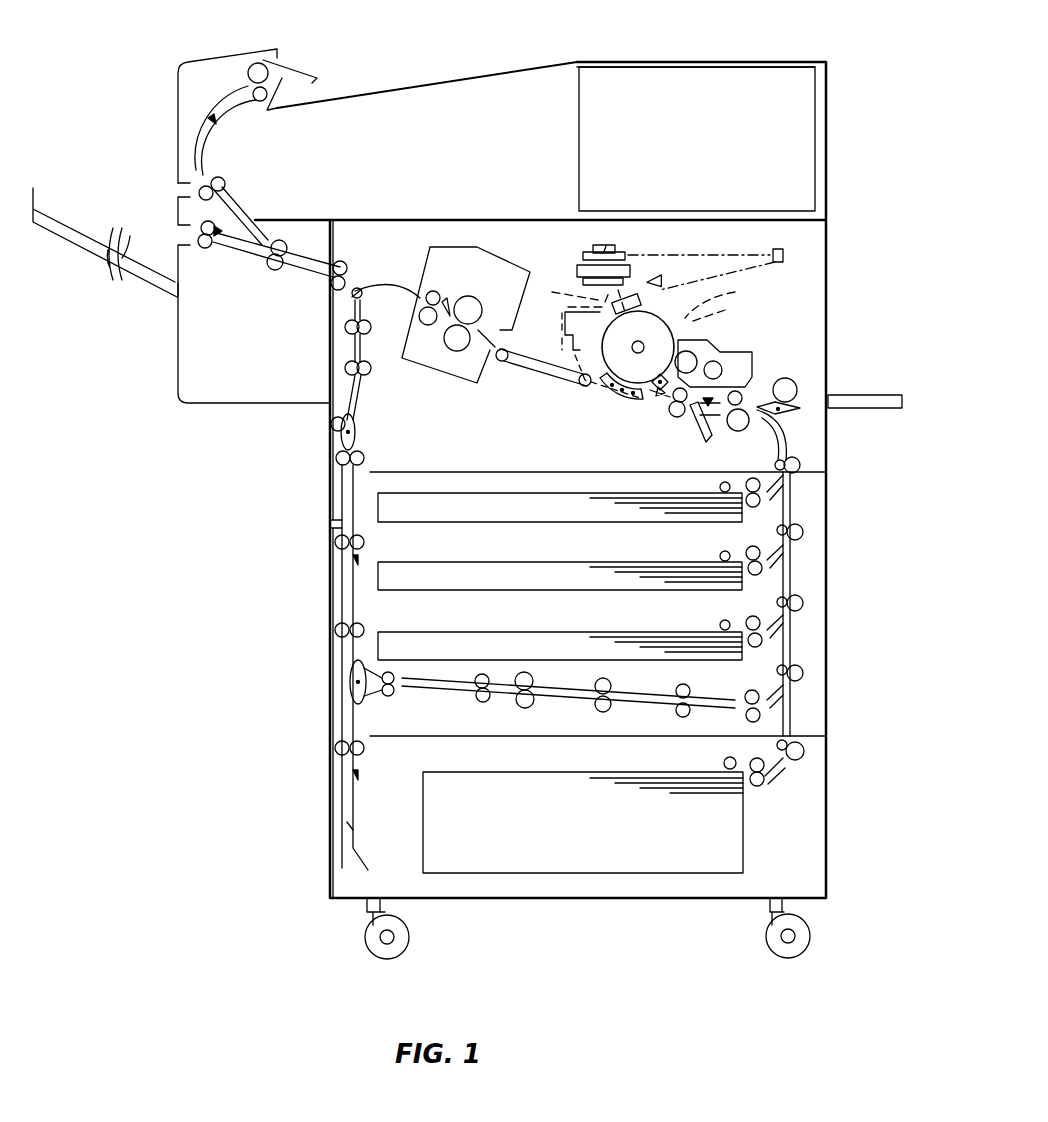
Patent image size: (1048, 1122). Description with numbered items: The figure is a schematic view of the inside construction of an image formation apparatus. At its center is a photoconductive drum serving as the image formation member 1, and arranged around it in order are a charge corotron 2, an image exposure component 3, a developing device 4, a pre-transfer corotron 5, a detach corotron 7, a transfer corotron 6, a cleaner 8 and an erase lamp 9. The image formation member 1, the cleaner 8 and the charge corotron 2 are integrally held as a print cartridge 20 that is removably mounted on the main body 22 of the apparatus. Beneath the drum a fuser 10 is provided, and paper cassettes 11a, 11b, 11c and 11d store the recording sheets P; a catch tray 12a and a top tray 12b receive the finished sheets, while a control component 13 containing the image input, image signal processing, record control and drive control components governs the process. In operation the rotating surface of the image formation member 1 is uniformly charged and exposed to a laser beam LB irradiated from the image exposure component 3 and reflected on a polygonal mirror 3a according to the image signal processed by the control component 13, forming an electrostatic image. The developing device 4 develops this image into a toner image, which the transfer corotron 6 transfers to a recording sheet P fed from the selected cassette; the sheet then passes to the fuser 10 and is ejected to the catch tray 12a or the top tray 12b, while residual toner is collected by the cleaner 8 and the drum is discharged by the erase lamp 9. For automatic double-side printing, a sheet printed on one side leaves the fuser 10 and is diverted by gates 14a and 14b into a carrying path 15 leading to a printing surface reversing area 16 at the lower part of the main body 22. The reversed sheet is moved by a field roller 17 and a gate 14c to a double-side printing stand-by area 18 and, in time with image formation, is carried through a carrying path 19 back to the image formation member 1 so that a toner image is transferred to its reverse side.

The photoconductive drum 1 is at (678, 325).
The charge corotron 2 is at (600, 290).
The image exposure component 3 is at (590, 245).
The polygonal mirror 3a is at (606, 245).
The laser beam LB is at (637, 250).
The developing device 4 is at (735, 355).
The pre-transfer corotron 5 is at (670, 412).
The transfer corotron 6 is at (645, 392).
The detach corotron 7 is at (620, 392).
The cleaner 8 is at (565, 325).
The erase lamp 9 is at (578, 294).
The fuser 10 is at (443, 375).
The paper cassette 11a is at (640, 522).
The paper cassette 11b is at (640, 590).
The paper cassette 11c is at (650, 662).
The paper cassette 11d is at (743, 818).
The catch tray 12a is at (80, 250).
The top tray 12b is at (360, 97).
The control component 13 is at (742, 90).
The gate 14a is at (355, 298).
The gate 14b is at (340, 424).
The gate 14c is at (350, 682).
The carrying path 15 is at (338, 492).
The printing surface reversing area 16 is at (347, 822).
The field roller 17 is at (338, 745).
The double-side printing stand-by area 18 is at (555, 700).
The carrying path 19 is at (790, 570).
The print cartridge 20 is at (730, 300).
The main body 22 is at (835, 300).
The recording sheet P is at (512, 493).